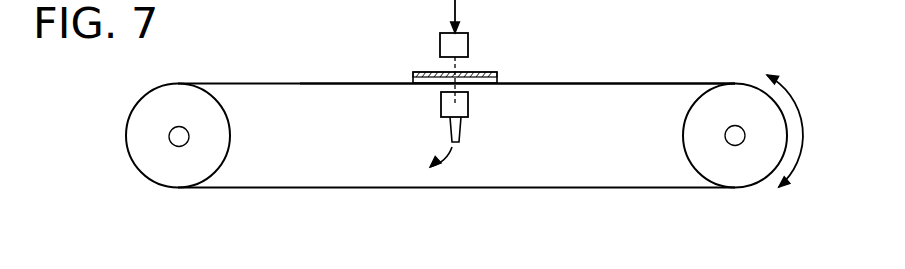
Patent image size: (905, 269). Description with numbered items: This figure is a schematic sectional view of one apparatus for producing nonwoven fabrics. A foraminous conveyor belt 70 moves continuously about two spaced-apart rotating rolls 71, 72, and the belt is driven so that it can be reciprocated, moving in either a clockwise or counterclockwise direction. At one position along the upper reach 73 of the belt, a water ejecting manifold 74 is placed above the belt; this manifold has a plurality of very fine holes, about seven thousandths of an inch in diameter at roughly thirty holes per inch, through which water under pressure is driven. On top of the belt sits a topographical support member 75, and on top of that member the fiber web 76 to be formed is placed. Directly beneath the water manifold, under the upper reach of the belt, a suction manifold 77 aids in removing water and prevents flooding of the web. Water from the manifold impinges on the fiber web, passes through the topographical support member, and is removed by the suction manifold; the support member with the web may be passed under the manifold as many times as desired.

The foraminous conveyor belt 70 is at (612, 188).
The rotating roll 71 is at (208, 138).
The rotating roll 72 is at (700, 137).
The upper reach 73 is at (633, 83).
The water ejecting manifold 74 is at (440, 42).
The topographical support member 75 is at (497, 78).
The fiber web 76 is at (472, 72).
The suction manifold 77 is at (468, 106).